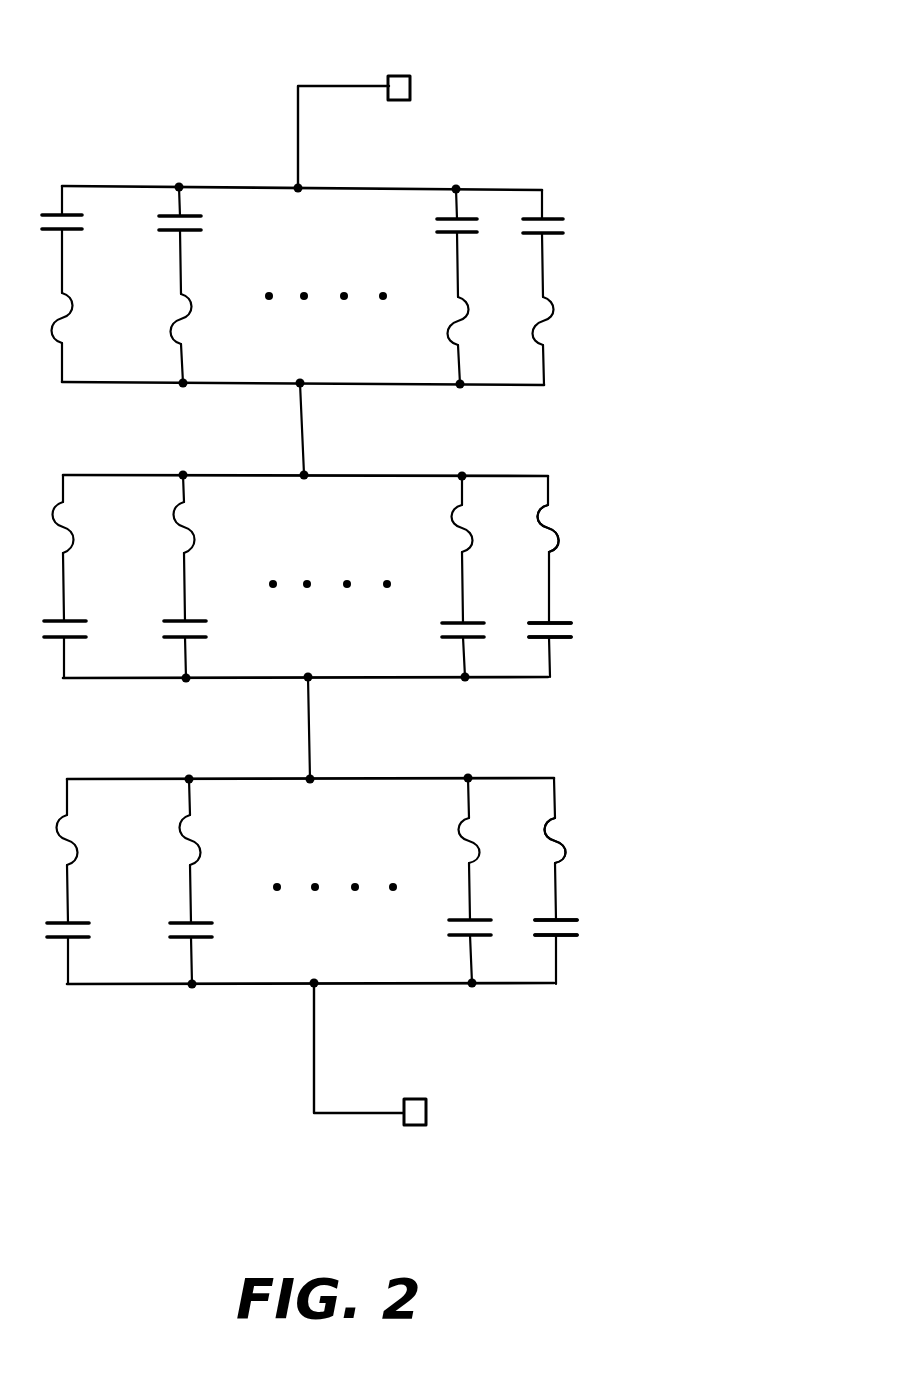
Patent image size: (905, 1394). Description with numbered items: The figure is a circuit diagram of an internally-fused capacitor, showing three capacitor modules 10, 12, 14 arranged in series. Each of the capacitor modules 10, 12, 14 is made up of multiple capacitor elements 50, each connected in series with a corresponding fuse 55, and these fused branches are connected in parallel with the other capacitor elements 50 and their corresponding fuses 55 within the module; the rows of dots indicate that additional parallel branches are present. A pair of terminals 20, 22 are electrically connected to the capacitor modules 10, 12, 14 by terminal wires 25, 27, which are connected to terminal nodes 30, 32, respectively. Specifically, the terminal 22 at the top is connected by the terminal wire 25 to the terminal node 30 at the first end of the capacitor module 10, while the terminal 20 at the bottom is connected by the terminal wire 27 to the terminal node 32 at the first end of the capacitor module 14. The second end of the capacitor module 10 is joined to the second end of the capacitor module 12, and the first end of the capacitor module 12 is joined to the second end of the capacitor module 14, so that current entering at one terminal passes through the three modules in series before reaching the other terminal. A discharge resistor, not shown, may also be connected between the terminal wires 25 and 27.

The capacitor module 10 is at (544, 386).
The capacitor module 12 is at (538, 679).
The capacitor module 14 is at (556, 985).
The terminal 20 is at (427, 1108).
The terminal 22 is at (410, 84).
The terminal wire 25 is at (332, 85).
The terminal wire 27 is at (360, 1114).
The terminal node 30 is at (298, 187).
The terminal node 32 is at (312, 987).
The capacitor element 50 is at (568, 624).
The fuse 55 is at (556, 531).